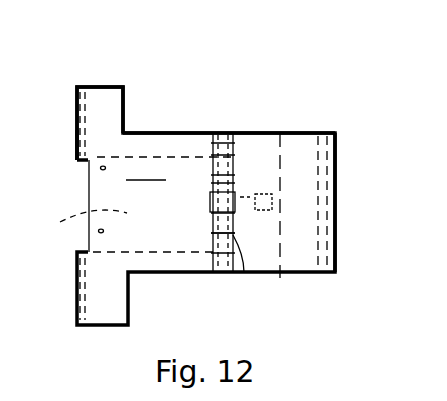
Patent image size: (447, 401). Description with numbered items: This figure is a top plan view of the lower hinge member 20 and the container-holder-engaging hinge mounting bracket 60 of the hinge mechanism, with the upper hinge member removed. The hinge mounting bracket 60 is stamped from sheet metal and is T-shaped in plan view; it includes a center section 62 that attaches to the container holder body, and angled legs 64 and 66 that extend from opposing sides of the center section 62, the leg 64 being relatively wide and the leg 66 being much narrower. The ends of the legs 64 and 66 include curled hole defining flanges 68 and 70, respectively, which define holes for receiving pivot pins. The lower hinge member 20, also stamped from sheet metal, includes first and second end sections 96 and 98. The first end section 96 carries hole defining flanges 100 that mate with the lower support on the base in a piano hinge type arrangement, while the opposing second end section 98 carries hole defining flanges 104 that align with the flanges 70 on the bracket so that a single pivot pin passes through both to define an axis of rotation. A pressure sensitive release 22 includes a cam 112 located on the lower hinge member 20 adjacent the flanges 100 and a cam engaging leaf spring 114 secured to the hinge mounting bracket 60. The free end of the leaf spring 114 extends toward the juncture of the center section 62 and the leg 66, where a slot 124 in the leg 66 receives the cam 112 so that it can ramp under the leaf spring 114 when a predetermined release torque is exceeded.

The lower hinge member 20 is at (302, 130).
The pressure sensitive release 22 is at (241, 159).
The hinge mounting bracket 60 is at (172, 133).
The center section 62 is at (146, 170).
The angled leg 64 is at (81, 87).
The angled leg 66 is at (215, 272).
The hole defining flange 68 is at (77, 131).
The hole defining flange 70 is at (244, 272).
The first end section 96 is at (305, 262).
The second end section 98 is at (265, 265).
The hole defining flanges 100 is at (335, 160).
The hole defining flanges 104 is at (213, 237).
The cam 112 is at (229, 203).
The leaf spring 114 is at (75, 220).
The slot 124 is at (210, 205).